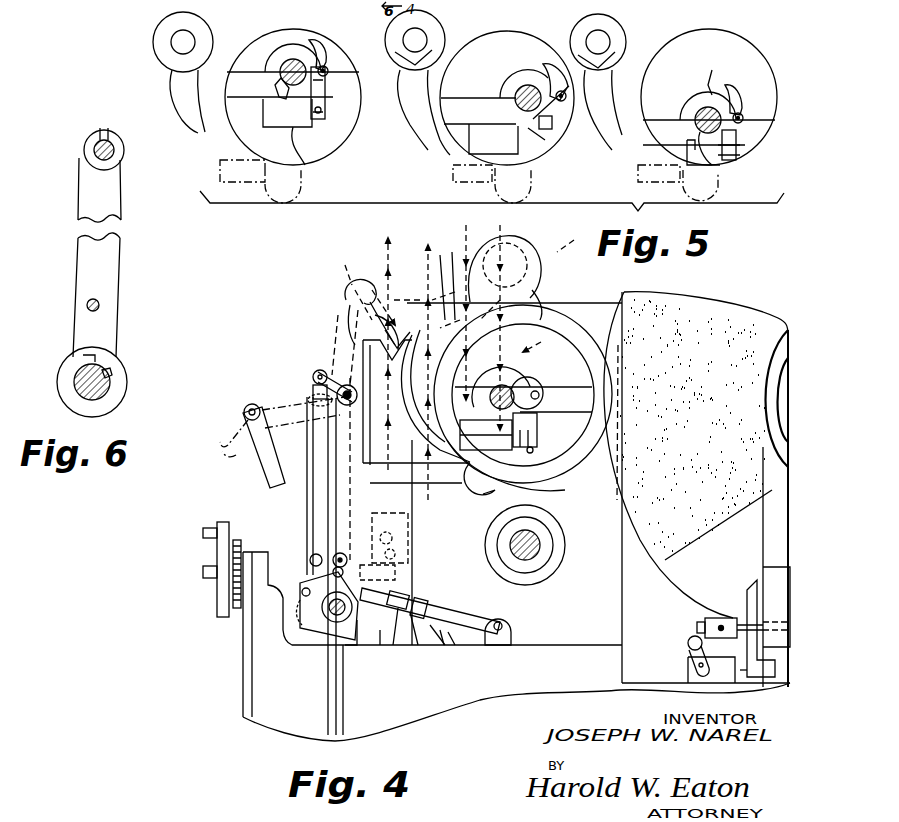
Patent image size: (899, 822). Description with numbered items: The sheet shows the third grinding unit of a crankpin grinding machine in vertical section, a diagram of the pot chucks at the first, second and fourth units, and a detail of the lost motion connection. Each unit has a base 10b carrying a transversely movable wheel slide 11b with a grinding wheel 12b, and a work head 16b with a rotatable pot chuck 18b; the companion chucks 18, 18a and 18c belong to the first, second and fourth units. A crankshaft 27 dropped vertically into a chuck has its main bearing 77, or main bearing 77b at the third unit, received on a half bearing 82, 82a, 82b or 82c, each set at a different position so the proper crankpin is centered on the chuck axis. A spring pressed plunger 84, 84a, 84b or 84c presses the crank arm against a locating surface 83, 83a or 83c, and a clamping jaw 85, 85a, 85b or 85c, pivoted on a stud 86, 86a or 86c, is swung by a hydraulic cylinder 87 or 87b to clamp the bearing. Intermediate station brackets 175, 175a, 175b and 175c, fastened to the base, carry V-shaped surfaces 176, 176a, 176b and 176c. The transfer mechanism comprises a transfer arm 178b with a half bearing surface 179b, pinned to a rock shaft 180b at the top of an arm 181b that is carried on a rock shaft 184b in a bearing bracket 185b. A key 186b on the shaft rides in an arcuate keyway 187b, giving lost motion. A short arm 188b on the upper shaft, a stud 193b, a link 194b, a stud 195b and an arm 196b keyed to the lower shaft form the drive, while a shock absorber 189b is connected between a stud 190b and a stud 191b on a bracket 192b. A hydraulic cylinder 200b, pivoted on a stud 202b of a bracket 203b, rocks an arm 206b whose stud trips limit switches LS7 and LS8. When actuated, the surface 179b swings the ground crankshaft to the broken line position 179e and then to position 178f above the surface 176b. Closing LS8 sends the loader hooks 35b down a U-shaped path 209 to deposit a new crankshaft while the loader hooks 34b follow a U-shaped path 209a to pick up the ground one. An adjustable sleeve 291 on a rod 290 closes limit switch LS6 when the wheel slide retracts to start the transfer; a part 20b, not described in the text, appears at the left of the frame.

In FIG. 4, the base 10b is at (488, 690).
In FIG. 4, the grinding wheel slide 11b is at (665, 550).
In FIG. 4, the grinding wheel 12b is at (700, 312).
In FIG. 4, the work head 16b is at (633, 293).
In FIG. 5, the pot chuck 18 is at (270, 38).
In FIG. 5, the pot chuck 18a is at (482, 43).
In FIG. 4, the pot chuck 18b is at (575, 320).
In FIG. 5, the pot chuck 18c is at (708, 33).
In FIG. 4, the adjusting knob 20b is at (222, 593).
In FIG. 4, the crankshaft 27 is at (525, 352).
In FIG. 4, the loader hooks 34b is at (470, 262).
In FIG. 4, the loader hooks 35b is at (553, 228).
In FIG. 5, the main bearing 77 is at (293, 58).
In FIG. 4, the main bearing 77b is at (502, 397).
In FIG. 5, the half bearing surface 82 is at (250, 66).
In FIG. 5, the half bearing 82a is at (500, 100).
In FIG. 4, the half bearing 82b is at (523, 385).
In FIG. 5, the half bearing 82c is at (718, 165).
In FIG. 5, the locating surface 83 is at (263, 118).
In FIG. 5, the locating surface 83a is at (508, 120).
In FIG. 5, the locating surface 83c is at (680, 150).
In FIG. 5, the spring pressed plunger 84 is at (313, 122).
In FIG. 5, the spring pressed plunger 84a is at (545, 148).
In FIG. 4, the spring pressed plunger 84b is at (537, 418).
In FIG. 5, the spring pressed plunger 84c is at (740, 163).
In FIG. 5, the work clamping jaw 85 is at (319, 44).
In FIG. 5, the work clamping jaw 85a is at (540, 50).
In FIG. 4, the work clamping jaw 85b is at (540, 390).
In FIG. 5, the work clamping jaw 85c is at (740, 85).
In FIG. 5, the pivot stud 86 is at (336, 71).
In FIG. 5, the pivot stud 86a is at (561, 104).
In FIG. 5, the pivot stud 86c is at (748, 108).
In FIG. 5, the cylinder 87 is at (300, 162).
In FIG. 4, the cylinder 87b is at (558, 482).
In FIG. 5, the intermediate station bracket 175 is at (165, 88).
In FIG. 5, the intermediate station bracket 175a is at (415, 98).
In FIG. 4, the intermediate station bracket 175b is at (372, 388).
In FIG. 5, the intermediate station bracket 175c is at (605, 95).
In FIG. 5, the V-shaped surface 176 is at (165, 45).
In FIG. 5, the V-shaped surface 176a is at (403, 42).
In FIG. 4, the V-shaped surface 176b is at (355, 340).
In FIG. 5, the V-shaped surface 176c is at (610, 44).
In FIG. 4, the transfer arm 178b is at (458, 472).
In FIG. 4, the transfer arm position 178f is at (352, 330).
In FIG. 4, the half bearing surface 179b is at (478, 494).
In FIG. 4, the broken line position 179e is at (535, 298).
In FIG. 6, the rock shaft 180b is at (96, 150).
In FIG. 4, the rock shaft 180b is at (335, 402).
In FIG. 6, the arm 181b is at (80, 268).
In FIG. 4, the arm 181b is at (328, 509).
In FIG. 6, the rock shaft 184b is at (80, 378).
In FIG. 4, the rock shaft 184b is at (330, 618).
In FIG. 4, the bearing bracket 185b is at (390, 642).
In FIG. 6, the key 186b is at (110, 377).
In FIG. 6, the keyway 187b is at (88, 360).
In FIG. 4, the short arm 188b is at (313, 378).
In FIG. 4, the double acting shock absorber 189b is at (354, 645).
In FIG. 6, the stud 190b is at (100, 304).
In FIG. 4, the stud 190b is at (330, 573).
In FIG. 4, the stud 191b is at (450, 648).
In FIG. 4, the bracket 192b is at (440, 640).
In FIG. 4, the stud 193b is at (352, 375).
In FIG. 4, the link 194b is at (282, 478).
In FIG. 4, the stud 195b is at (300, 590).
In FIG. 4, the arm 196b is at (310, 608).
In FIG. 4, the cylinder 200b is at (460, 602).
In FIG. 4, the stud 202b is at (503, 622).
In FIG. 4, the bracket 203b is at (512, 630).
In FIG. 4, the arm 206b is at (485, 545).
In FIG. 4, the U-shaped path 209 is at (492, 236).
In FIG. 4, the U-shaped path 209a is at (462, 235).
In FIG. 4, the rod 290 is at (706, 618).
In FIG. 4, the adjustable sleeve 291 is at (697, 628).
In FIG. 4, the limit switch LS6 is at (690, 677).
In FIG. 4, the limit switch LS7 is at (322, 525).
In FIG. 4, the limit switch LS8 is at (390, 513).